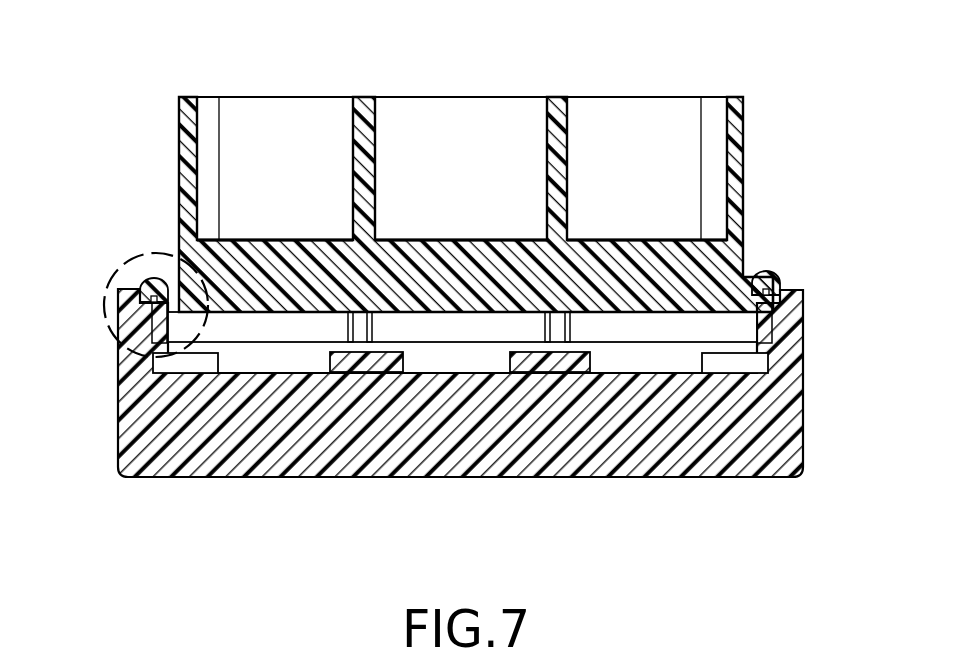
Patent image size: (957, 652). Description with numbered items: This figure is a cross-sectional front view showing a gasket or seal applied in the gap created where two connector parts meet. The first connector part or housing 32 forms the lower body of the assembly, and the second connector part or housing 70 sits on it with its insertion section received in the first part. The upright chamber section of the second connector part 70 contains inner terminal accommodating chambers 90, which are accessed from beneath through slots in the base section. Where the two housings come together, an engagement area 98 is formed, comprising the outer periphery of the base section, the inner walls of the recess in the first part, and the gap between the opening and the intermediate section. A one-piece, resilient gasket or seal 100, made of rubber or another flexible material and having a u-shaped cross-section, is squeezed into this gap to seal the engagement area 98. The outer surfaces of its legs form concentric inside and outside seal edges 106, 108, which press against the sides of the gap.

The first connector part or housing 32 is at (485, 478).
The second connector part or housing 70 is at (450, 245).
The inner terminal accommodating chambers 90 is at (312, 122).
The engagement area 98 is at (120, 262).
The gasket or seal 100 is at (147, 290).
The inside seal edge 106 is at (712, 262).
The outside seal edge 108 is at (802, 290).